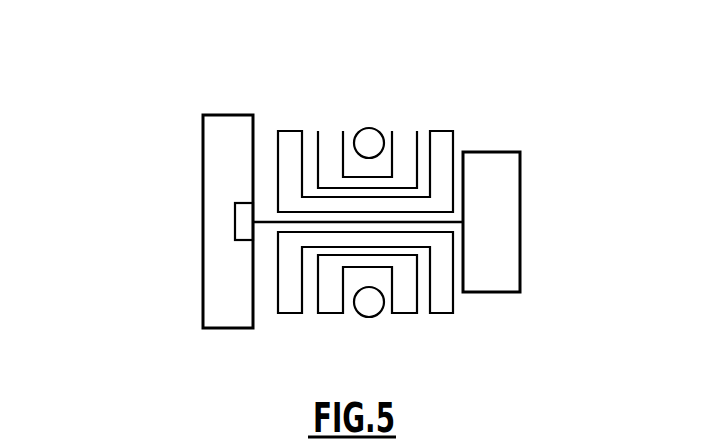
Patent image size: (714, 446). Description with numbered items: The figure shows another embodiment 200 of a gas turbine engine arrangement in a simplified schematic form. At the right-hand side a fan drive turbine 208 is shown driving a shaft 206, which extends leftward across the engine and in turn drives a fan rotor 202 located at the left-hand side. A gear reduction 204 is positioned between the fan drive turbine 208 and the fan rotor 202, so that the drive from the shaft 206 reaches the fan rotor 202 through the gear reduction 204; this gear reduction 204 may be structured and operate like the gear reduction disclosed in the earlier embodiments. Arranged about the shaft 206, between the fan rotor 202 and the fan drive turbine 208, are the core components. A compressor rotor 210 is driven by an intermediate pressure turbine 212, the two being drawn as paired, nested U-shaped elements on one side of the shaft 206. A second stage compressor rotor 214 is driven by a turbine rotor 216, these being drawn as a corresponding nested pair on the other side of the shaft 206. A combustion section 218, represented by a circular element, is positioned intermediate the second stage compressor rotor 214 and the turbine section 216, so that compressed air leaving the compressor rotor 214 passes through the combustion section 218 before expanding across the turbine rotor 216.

The embodiment 200 is at (153, 92).
The fan rotor 202 is at (217, 165).
The gear reduction 204 is at (233, 233).
The shaft 206 is at (437, 220).
The fan drive turbine 208 is at (505, 202).
The compressor rotor 210 is at (292, 287).
The intermediate pressure turbine 212 is at (442, 227).
The second stage compressor rotor 214 is at (330, 138).
The turbine rotor 216 is at (407, 138).
The combustion section 218 is at (369, 128).